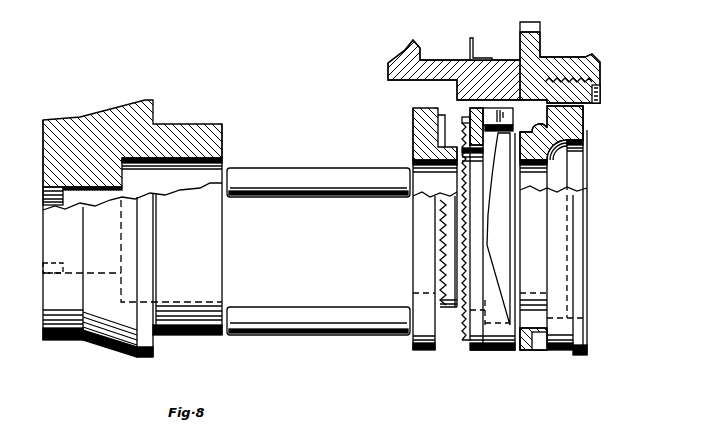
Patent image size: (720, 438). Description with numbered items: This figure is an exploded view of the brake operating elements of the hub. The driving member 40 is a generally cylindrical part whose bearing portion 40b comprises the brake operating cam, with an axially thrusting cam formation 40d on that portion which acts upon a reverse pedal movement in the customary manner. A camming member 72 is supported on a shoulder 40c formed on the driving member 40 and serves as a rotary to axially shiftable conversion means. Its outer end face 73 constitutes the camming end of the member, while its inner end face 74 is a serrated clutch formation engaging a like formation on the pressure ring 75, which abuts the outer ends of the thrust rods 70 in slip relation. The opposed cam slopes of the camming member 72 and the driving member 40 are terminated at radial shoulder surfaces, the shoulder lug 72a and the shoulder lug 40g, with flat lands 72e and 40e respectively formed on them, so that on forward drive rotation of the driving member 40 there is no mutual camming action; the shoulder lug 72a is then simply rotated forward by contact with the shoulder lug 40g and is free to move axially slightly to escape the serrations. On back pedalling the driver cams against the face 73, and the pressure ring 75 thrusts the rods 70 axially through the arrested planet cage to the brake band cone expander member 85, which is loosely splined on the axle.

The driving member 40 is at (502, 72).
The bearing portion 40b is at (565, 355).
The shoulder 40c is at (583, 122).
The axially thrusting cam formation 40d is at (545, 203).
The flat land 40e is at (522, 263).
The shoulder lug 40g is at (540, 350).
The thrust rods 70 is at (288, 197).
The camming member 72 is at (495, 350).
The shoulder lug 72a is at (495, 110).
The flat land 72e is at (483, 210).
The outer end face 73 is at (499, 286).
The inner end face 74 is at (463, 332).
The pressure ring 75 is at (432, 352).
The brake band cone expander member 85 is at (185, 337).